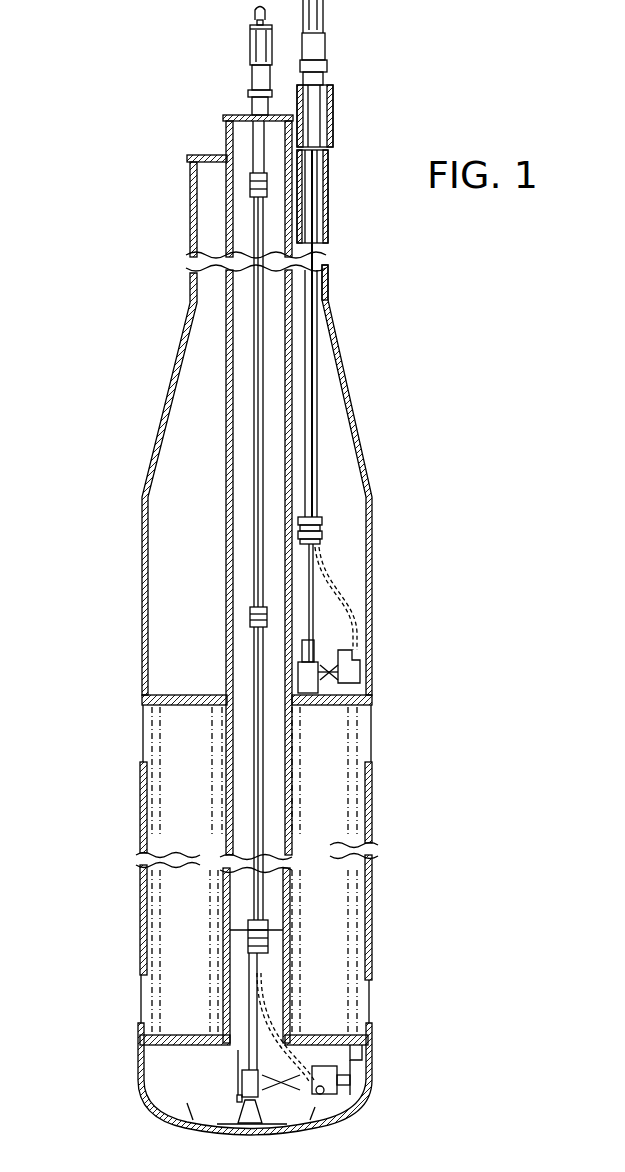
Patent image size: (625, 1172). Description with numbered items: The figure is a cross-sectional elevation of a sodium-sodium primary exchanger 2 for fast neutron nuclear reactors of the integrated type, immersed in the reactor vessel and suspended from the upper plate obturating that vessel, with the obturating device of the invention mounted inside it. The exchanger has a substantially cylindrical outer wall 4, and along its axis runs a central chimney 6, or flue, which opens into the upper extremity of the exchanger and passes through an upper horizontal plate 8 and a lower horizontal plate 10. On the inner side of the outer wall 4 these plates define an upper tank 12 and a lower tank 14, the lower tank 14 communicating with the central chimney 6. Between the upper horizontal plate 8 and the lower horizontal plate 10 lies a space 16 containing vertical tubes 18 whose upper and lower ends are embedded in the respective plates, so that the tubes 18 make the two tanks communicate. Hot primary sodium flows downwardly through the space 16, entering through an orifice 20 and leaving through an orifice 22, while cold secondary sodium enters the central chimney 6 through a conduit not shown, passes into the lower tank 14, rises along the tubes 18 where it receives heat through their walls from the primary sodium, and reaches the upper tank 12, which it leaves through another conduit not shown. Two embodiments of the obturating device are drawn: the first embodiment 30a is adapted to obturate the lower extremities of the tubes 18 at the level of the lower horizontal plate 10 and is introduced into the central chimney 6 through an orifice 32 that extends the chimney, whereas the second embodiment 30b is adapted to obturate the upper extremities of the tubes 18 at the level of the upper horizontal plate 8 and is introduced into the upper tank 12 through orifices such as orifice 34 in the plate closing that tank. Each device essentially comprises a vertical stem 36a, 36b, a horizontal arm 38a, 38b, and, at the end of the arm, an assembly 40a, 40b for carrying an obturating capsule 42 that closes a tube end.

The primary exchanger 2 is at (112, 623).
The outer wall 4 is at (372, 547).
The central chimney 6 is at (220, 898).
The upper horizontal plate 8 is at (337, 712).
The lower horizontal plate 10 is at (334, 1027).
The upper tank 12 is at (177, 550).
The lower tank 14 is at (167, 1092).
The space 16 is at (188, 825).
The vertical tubes 18 is at (372, 907).
The orifice 20 is at (145, 750).
The orifice 22 is at (140, 1003).
The first embodiment of the obturating device 30a is at (238, 345).
The second embodiment of the obturating device 30b is at (328, 406).
The orifice 32 is at (243, 137).
The orifice 34 is at (330, 117).
The vertical stem 36a is at (248, 228).
The vertical stem 36b is at (322, 328).
The horizontal arm 38a is at (242, 1070).
The horizontal arm 38b is at (338, 650).
The assembly 40a is at (346, 1100).
The assembly 40b is at (365, 658).
The obturating capsule 42 is at (373, 697).